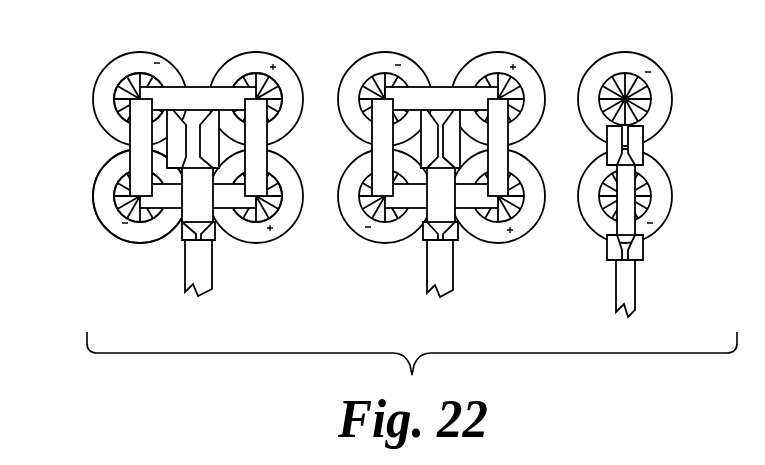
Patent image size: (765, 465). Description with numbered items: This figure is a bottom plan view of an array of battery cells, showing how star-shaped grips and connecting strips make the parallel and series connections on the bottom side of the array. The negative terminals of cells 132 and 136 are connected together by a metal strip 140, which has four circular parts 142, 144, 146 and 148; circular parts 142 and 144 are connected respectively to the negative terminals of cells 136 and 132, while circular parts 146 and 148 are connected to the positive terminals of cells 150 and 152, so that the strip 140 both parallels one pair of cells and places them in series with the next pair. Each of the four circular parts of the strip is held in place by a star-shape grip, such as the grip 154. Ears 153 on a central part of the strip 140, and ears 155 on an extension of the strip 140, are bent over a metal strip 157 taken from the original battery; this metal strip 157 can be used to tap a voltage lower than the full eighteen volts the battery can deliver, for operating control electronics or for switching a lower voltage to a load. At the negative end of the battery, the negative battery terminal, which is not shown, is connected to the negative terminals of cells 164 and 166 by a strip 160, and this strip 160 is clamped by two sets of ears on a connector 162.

The cell 132 is at (118, 237).
The cell 136 is at (132, 53).
The metal strip 140 is at (178, 178).
The circular part 142 is at (122, 85).
The circular part 144 is at (97, 182).
The circular part 146 is at (245, 78).
The circular part 148 is at (242, 218).
The cell 150 is at (270, 240).
The cell 152 is at (267, 53).
The ears 153 is at (185, 150).
The star-shape grip 154 is at (113, 197).
The ears 155 is at (185, 232).
The metal strip 157 is at (205, 272).
The strip 160 is at (630, 293).
The connector 162 is at (637, 168).
The cell 164 is at (609, 176).
The cell 166 is at (648, 62).